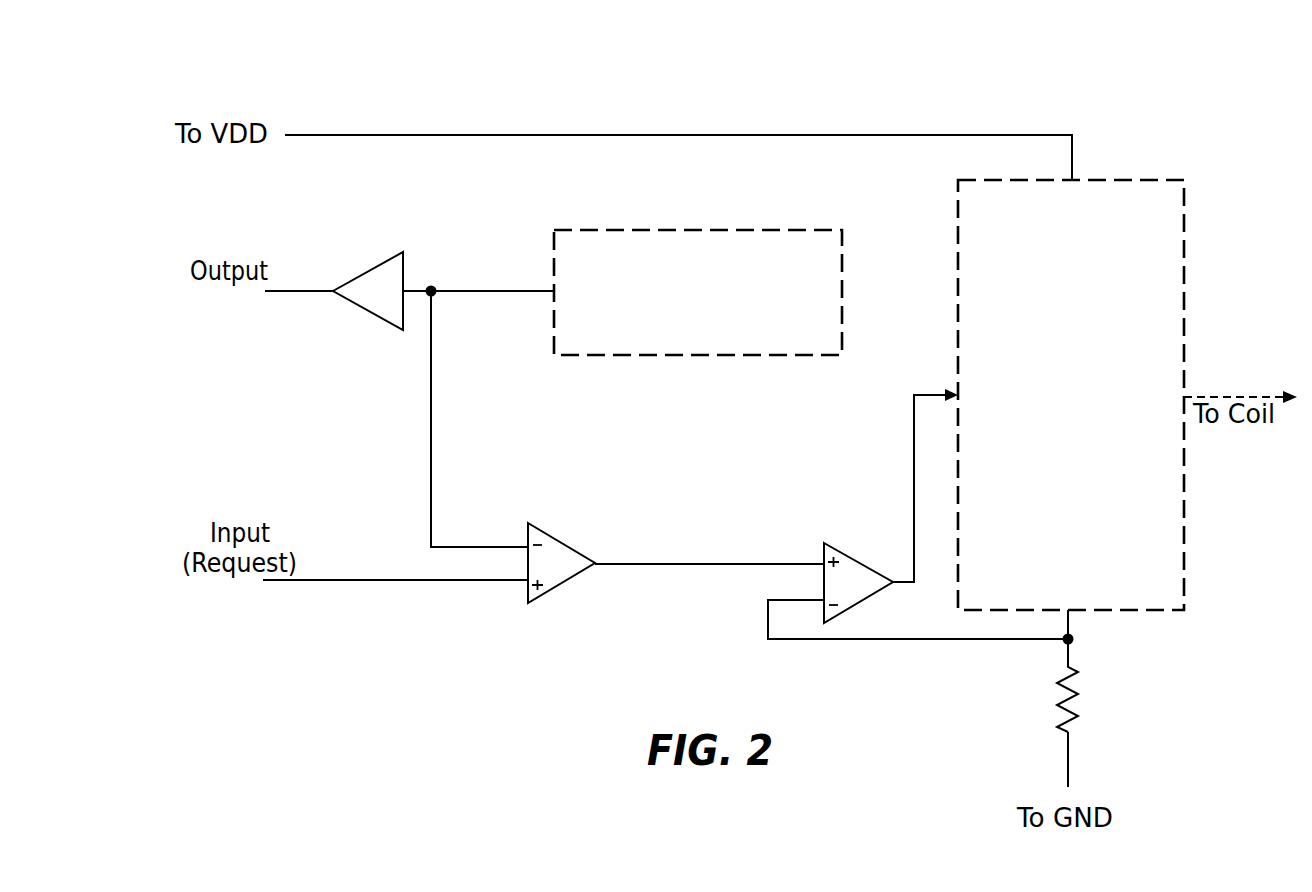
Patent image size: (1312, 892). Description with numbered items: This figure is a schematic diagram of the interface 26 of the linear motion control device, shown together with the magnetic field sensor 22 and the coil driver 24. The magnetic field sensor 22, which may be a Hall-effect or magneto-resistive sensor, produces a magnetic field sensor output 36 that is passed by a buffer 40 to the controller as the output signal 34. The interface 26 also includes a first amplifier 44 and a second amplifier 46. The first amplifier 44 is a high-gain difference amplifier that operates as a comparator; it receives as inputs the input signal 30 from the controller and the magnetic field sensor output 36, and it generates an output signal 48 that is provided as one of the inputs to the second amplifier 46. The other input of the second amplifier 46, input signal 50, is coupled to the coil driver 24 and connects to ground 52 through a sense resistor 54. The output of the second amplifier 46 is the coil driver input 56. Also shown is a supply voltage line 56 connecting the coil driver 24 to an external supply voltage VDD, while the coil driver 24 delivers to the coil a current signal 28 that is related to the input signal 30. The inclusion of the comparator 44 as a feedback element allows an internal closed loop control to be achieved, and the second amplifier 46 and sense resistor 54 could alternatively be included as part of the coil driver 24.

The magnetic field sensor 22 is at (712, 326).
The coil driver 24 is at (1083, 419).
The interface 26 is at (734, 52).
The current signal 28 is at (1215, 397).
The input signal 30 is at (343, 580).
The output signal 34 is at (298, 291).
The magnetic field sensor output 36 is at (515, 291).
The buffer 40 is at (393, 306).
The first amplifier 44 is at (567, 572).
The second amplifier 46 is at (865, 592).
The output signal 48 is at (682, 565).
The input signal 50 is at (903, 640).
The ground 52 is at (1068, 761).
The sense resistor 54 is at (1077, 697).
The coil driver input 56 is at (435, 135).